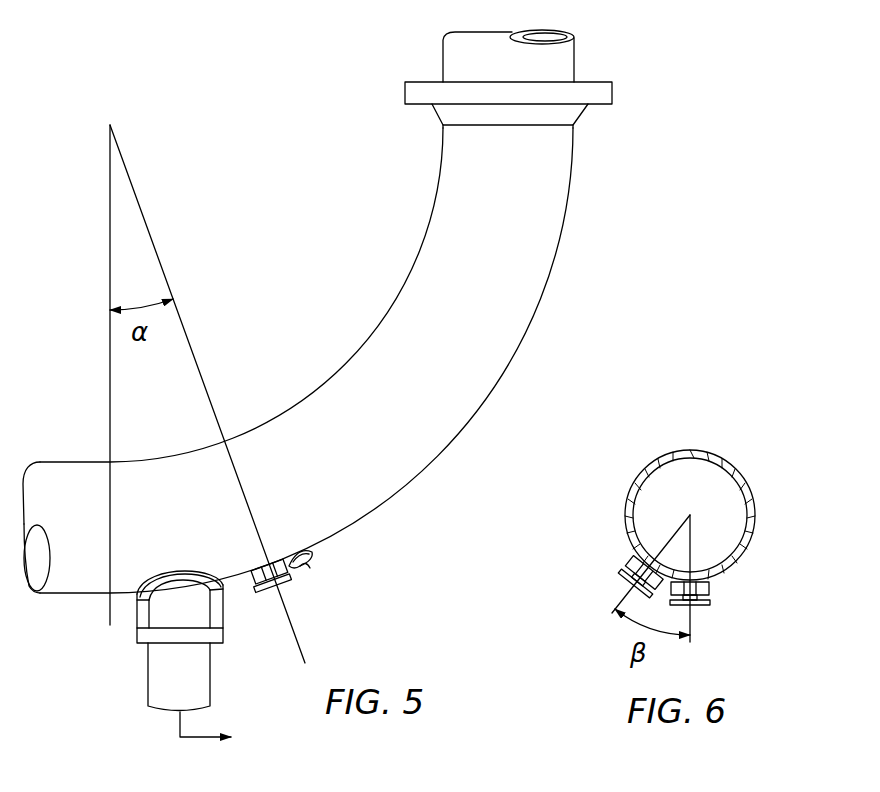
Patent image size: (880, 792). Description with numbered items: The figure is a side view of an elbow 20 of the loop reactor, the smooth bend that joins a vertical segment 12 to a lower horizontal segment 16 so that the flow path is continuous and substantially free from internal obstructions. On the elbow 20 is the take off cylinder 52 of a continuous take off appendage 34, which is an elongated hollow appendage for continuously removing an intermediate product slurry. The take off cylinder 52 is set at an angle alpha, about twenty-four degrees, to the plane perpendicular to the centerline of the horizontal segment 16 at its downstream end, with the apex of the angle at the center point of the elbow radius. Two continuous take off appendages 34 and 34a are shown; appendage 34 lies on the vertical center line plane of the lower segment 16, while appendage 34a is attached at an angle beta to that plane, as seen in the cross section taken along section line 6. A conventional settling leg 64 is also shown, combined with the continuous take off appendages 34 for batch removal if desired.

In FIG. 5, the vertical segment 12 is at (443, 58).
In FIG. 5, the lower horizontal segment 16 is at (83, 596).
In FIG. 5, the elbow 20 is at (562, 238).
In FIG. 6, the elbow 20 is at (742, 565).
In FIG. 5, the continuous take off appendage 34 is at (285, 590).
In FIG. 6, the continuous take off appendage 34 is at (710, 598).
In FIG. 5, the continuous take off appendage 34a is at (310, 555).
In FIG. 6, the continuous take off appendage 34a is at (642, 560).
In FIG. 5, the take off cylinder 52 is at (305, 570).
In FIG. 5, the settling leg 64 is at (197, 687).
In FIG. 5, the section line 6 is at (212, 423).